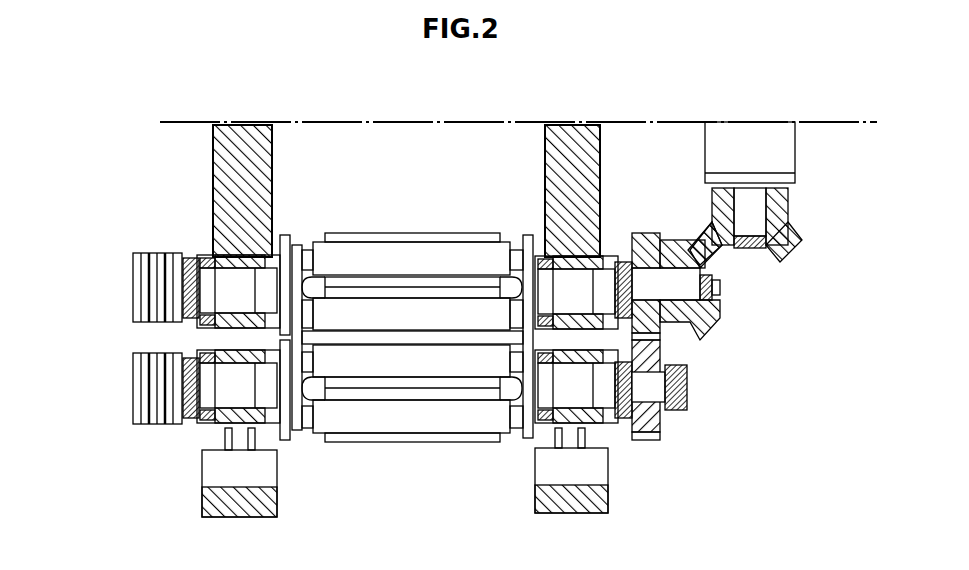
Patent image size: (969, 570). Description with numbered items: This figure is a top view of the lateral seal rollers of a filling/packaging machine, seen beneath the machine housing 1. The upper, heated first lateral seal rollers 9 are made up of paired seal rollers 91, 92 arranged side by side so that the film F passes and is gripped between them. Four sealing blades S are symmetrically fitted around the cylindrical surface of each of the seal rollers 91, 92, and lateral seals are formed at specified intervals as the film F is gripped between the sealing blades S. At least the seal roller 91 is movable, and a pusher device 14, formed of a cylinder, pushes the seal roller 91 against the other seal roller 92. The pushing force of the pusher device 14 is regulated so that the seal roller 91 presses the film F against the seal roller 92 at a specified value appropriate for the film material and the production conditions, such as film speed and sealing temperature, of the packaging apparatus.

The machine housing 1 is at (830, 122).
The first lateral seal rollers 9 is at (95, 305).
The pusher device 14 is at (208, 473).
The seal roller 91 is at (422, 441).
The seal roller 92 is at (400, 232).
The sealing blades S is at (437, 285).
The film F is at (362, 337).